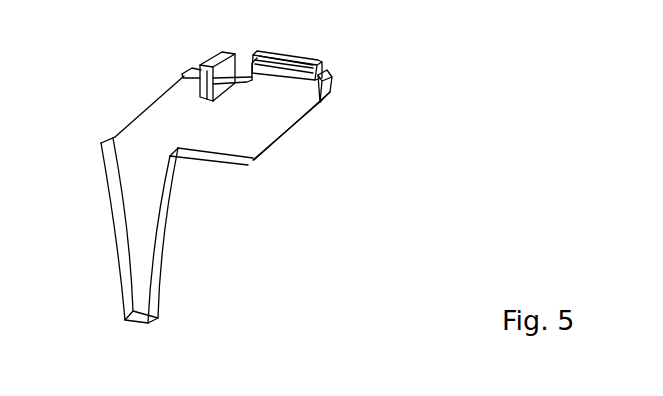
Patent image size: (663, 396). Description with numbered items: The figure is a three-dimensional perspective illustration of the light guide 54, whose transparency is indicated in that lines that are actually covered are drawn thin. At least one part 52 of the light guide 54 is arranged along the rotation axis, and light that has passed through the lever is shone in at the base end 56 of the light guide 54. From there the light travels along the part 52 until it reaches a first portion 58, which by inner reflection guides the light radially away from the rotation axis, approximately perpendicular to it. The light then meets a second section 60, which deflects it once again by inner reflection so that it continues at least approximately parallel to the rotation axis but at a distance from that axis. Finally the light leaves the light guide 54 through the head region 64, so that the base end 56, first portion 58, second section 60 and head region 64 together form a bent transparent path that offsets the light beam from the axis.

The part of the light guide 52 is at (210, 228).
The light guide 54 is at (230, 133).
The base end 56 is at (127, 320).
The first portion 58 is at (140, 102).
The second section 60 is at (288, 132).
The head region 64 is at (315, 59).